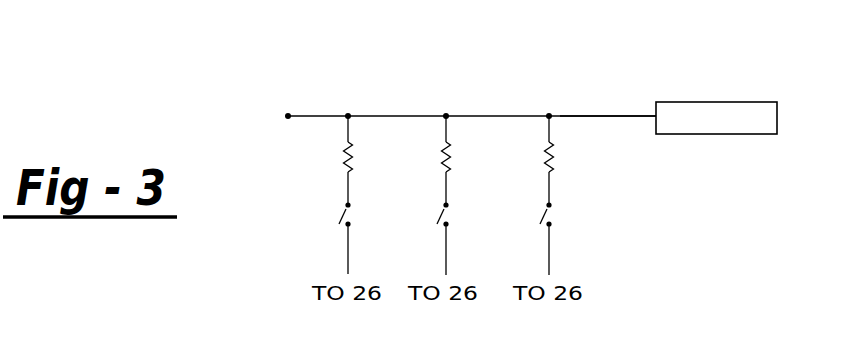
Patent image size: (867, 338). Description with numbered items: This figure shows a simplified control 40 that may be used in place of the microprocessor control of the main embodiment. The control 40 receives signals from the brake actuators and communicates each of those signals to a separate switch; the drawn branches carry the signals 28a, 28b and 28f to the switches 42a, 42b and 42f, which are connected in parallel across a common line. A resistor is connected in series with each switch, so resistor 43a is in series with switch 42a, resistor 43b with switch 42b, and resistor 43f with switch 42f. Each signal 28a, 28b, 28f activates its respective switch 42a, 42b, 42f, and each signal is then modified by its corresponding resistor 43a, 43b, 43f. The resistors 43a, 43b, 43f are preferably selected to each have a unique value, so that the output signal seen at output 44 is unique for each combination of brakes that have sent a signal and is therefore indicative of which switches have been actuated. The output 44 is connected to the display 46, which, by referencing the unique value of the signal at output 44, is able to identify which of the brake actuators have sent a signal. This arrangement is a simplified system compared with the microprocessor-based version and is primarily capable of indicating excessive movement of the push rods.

The control 40 is at (466, 52).
The output 44 is at (617, 116).
The display 46 is at (675, 102).
The resistor 43a is at (343, 165).
The resistor 43b is at (449, 167).
The resistor 43f is at (555, 152).
The switch 42a is at (348, 190).
The switch 42b is at (447, 193).
The switch 42f is at (550, 192).
The signal 28a is at (349, 257).
The signal 28b is at (447, 258).
The signal 28f is at (550, 256).